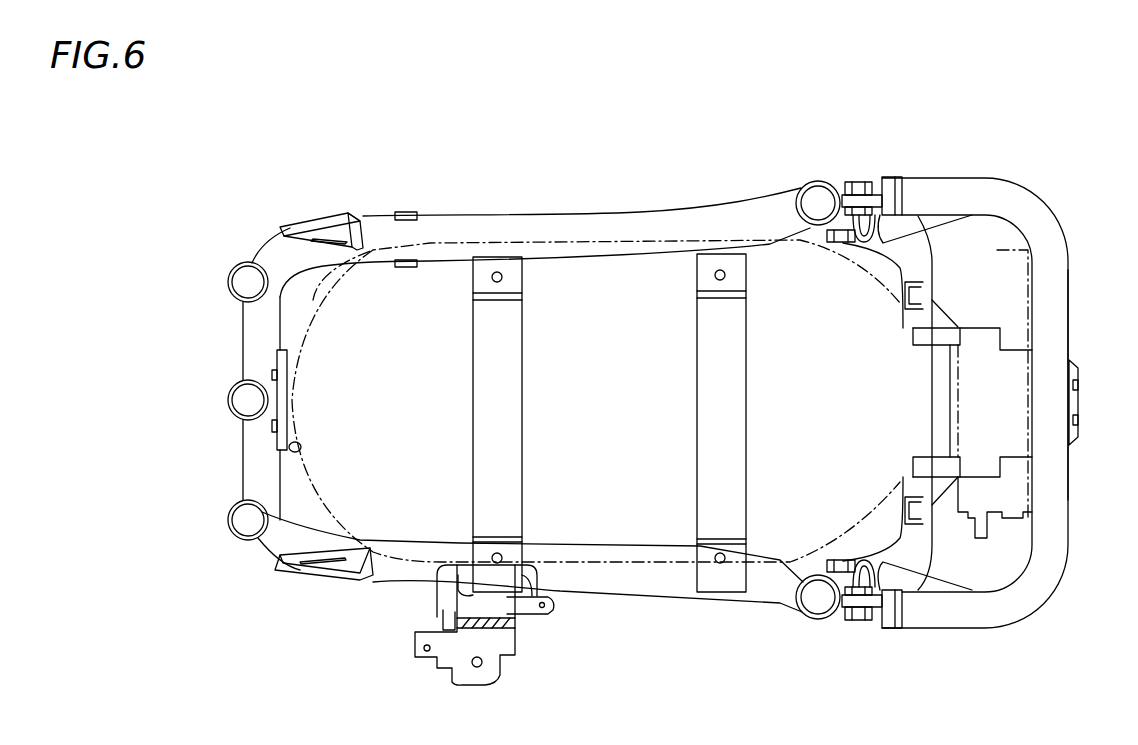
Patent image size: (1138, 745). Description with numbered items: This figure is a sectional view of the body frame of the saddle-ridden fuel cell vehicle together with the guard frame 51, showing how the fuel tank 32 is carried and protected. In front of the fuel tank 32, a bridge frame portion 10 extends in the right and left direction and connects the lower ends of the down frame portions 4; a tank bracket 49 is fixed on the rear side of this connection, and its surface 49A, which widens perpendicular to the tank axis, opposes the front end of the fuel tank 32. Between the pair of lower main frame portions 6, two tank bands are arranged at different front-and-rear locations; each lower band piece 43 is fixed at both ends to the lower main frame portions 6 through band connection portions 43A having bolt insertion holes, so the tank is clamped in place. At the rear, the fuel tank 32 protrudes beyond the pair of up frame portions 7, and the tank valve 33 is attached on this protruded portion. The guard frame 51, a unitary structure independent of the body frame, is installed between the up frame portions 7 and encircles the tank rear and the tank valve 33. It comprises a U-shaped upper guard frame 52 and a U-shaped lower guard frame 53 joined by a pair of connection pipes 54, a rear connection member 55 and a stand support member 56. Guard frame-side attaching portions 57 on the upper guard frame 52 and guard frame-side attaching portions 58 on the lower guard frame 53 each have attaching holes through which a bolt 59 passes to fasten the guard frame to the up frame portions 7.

The down frame portions 4 is at (228, 282).
The lower main frame portions 6 is at (604, 221).
The up frame portions 7 is at (802, 187).
The bridge frame portion 10 is at (257, 316).
The fuel tank 32 is at (585, 564).
The tank valve 33 is at (1040, 237).
The lower band piece 43 is at (481, 404).
The band connection portions 43A is at (480, 277).
The tank bracket 49 is at (279, 361).
The surface 49A is at (293, 448).
The guard frame 51 is at (1040, 183).
The upper guard frame 52 is at (1062, 284).
The lower guard frame 53 is at (931, 262).
The connection pipes 54 is at (913, 223).
The rear connection member 55 is at (1079, 402).
The stand support member 56 is at (1007, 438).
The guard frame-side attaching portions 57 is at (888, 177).
The guard frame-side attaching portions 58 is at (868, 244).
The bolt 59 is at (856, 182).